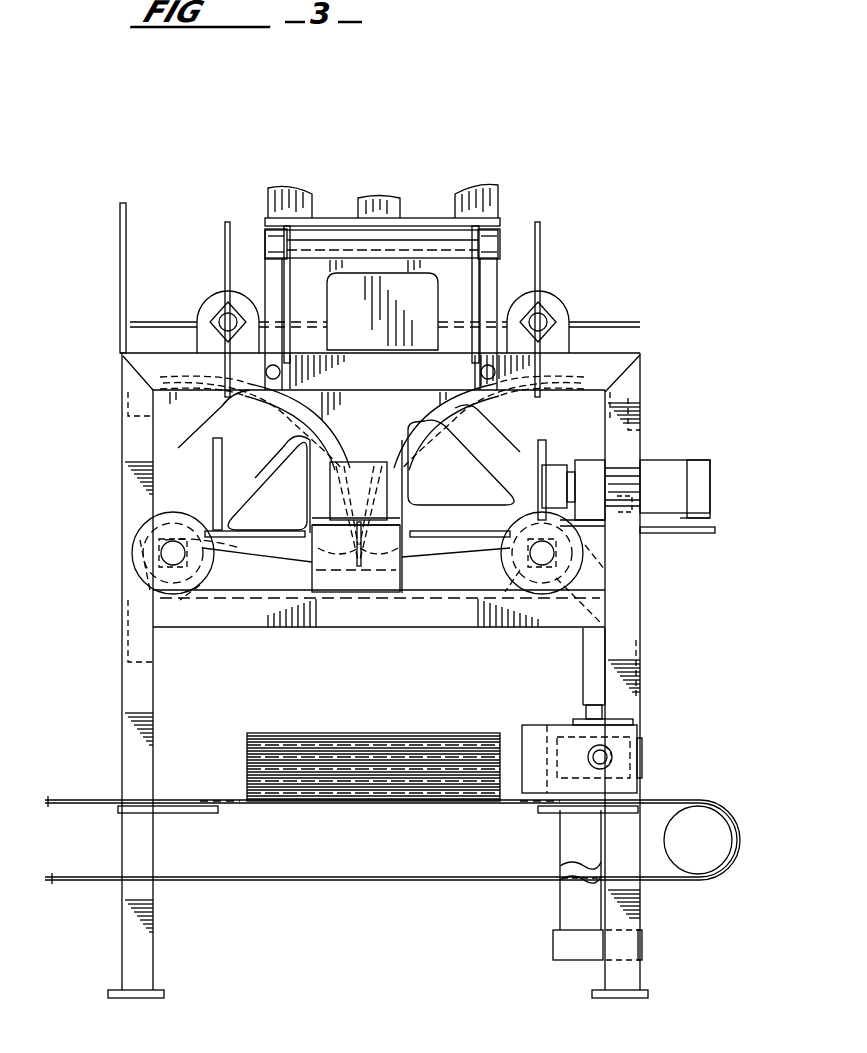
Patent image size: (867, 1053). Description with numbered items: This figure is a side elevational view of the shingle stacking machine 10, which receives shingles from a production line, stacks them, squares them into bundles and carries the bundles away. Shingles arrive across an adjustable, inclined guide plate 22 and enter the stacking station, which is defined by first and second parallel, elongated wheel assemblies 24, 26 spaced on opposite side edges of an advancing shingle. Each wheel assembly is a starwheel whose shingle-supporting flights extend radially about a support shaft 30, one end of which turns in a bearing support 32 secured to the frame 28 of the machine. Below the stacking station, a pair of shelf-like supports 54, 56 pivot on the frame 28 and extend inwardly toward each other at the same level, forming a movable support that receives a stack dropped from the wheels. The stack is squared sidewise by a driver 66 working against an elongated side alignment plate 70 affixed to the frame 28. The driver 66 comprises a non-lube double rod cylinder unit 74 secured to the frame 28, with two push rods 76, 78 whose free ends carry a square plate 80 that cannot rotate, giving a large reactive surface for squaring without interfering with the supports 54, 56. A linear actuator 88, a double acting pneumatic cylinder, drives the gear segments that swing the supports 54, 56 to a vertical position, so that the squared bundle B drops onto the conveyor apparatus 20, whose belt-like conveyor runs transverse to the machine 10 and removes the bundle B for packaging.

The shingle stacking machine 10 is at (675, 272).
The conveyor apparatus 20 is at (668, 800).
The guide plate 22 is at (508, 200).
The first wheel assembly 24 is at (225, 242).
The second wheel assembly 26 is at (541, 244).
The frame 28 is at (622, 362).
The support shaft 30 is at (222, 325).
The bearing support 32 is at (207, 306).
The shelf-like support 54 is at (250, 546).
The shelf-like support 56 is at (445, 548).
The driver 66 is at (663, 458).
The side alignment plate 70 is at (223, 446).
The double rod cylinder unit 74 is at (673, 496).
The push rod 76 is at (570, 465).
The push rod 78 is at (522, 510).
The plate 80 is at (538, 456).
The linear actuator 88 is at (562, 906).
The shingle bundle B is at (247, 745).